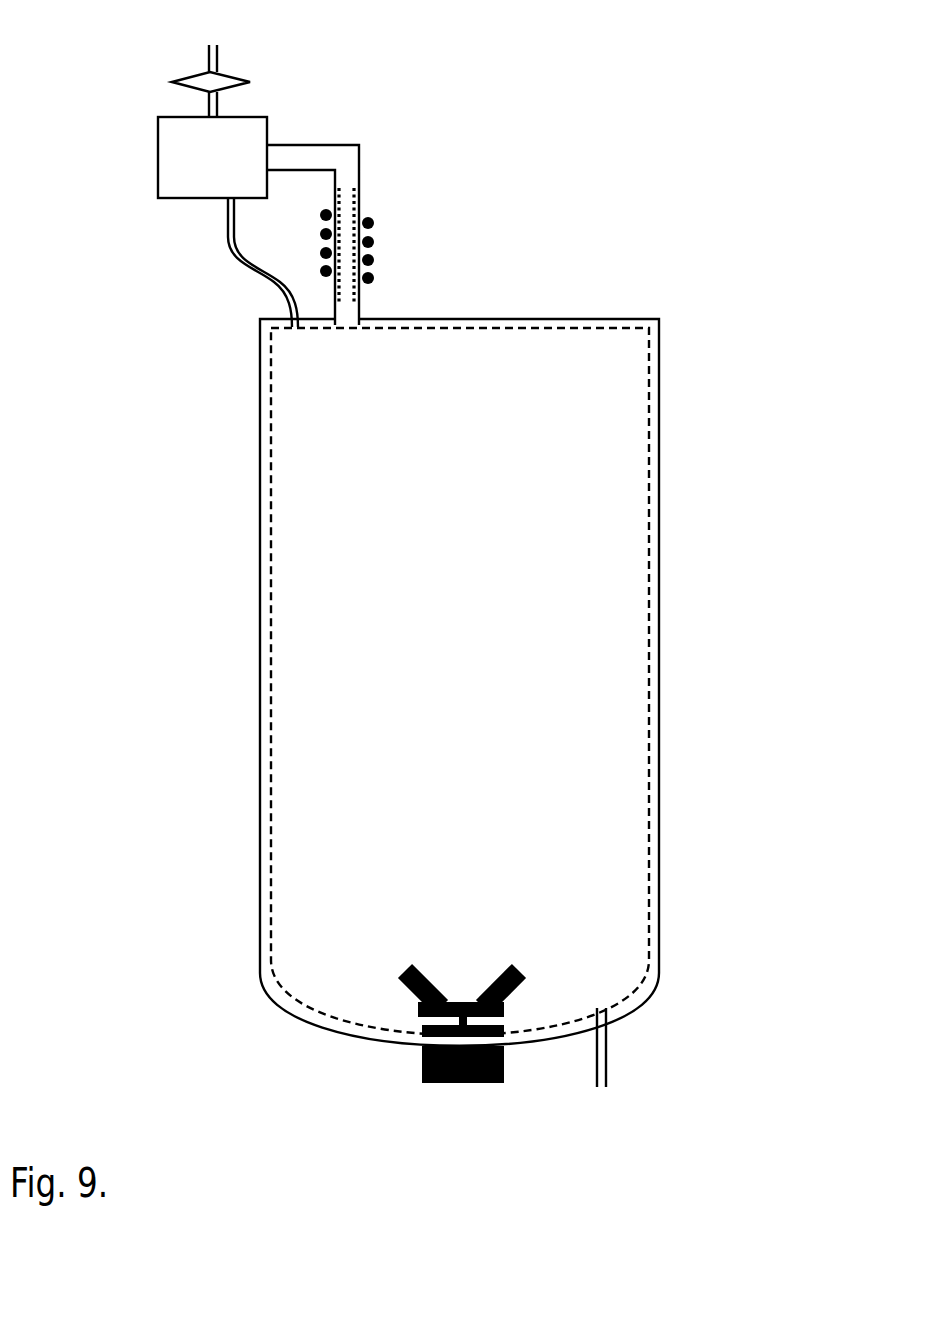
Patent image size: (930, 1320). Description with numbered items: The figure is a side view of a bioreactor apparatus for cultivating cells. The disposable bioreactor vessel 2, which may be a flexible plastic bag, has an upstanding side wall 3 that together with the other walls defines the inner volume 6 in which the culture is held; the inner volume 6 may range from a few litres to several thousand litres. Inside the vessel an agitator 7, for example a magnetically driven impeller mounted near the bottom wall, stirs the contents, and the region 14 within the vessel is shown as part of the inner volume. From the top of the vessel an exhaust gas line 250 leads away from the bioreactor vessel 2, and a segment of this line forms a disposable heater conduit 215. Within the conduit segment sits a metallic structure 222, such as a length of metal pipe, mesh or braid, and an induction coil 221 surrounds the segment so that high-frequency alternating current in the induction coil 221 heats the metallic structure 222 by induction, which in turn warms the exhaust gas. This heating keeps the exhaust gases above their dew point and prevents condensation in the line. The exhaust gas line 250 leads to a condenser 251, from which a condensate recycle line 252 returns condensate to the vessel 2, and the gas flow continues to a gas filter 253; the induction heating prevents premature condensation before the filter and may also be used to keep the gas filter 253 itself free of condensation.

The disposable bioreactor vessel 2 is at (650, 379).
The upstanding side wall 3 is at (270, 930).
The inner volume 6 is at (455, 559).
The vessel interior 14 is at (494, 687).
The agitator 7 is at (480, 1002).
The exhaust gas line 250 is at (315, 157).
The disposable heater conduit 215 is at (360, 198).
The induction coil 221 is at (368, 242).
The metallic structure 222 is at (355, 210).
The condenser 251 is at (195, 147).
The condensate recycle line 252 is at (228, 250).
The gas filter 253 is at (192, 77).